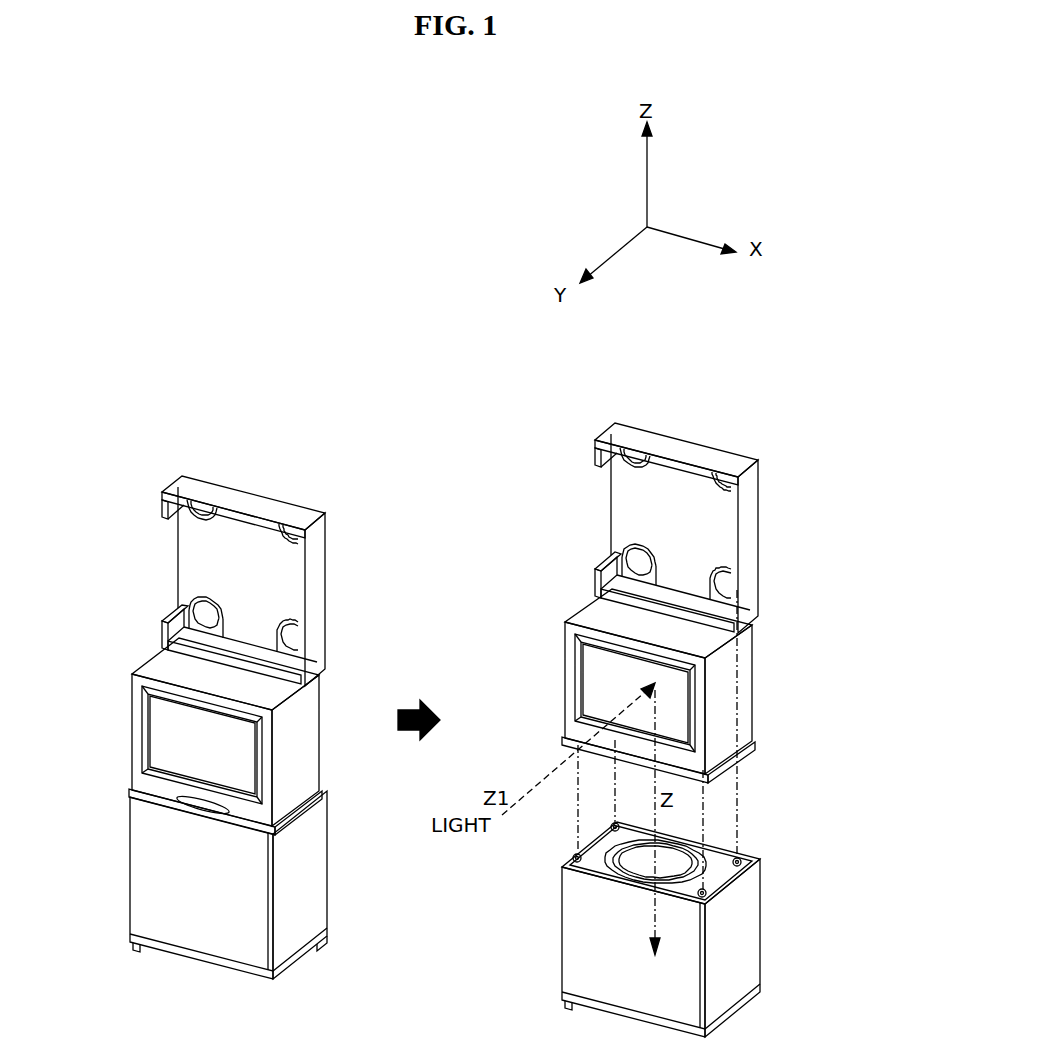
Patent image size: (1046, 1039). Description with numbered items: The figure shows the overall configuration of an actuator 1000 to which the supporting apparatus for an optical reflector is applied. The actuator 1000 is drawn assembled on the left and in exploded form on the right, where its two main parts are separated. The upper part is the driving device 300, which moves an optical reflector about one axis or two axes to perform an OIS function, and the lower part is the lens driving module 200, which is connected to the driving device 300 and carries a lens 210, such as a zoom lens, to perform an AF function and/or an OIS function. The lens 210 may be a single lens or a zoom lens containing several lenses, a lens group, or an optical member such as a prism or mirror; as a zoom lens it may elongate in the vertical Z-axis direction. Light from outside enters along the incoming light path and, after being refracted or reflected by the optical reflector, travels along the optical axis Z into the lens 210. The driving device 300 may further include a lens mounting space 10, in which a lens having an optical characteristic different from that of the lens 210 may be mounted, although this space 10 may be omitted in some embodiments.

The actuator 1000 is at (144, 447).
The driving device 300 is at (588, 413).
The lens mounting space 10 is at (627, 507).
The lens driving module 200 is at (780, 923).
The lens 210 is at (700, 843).